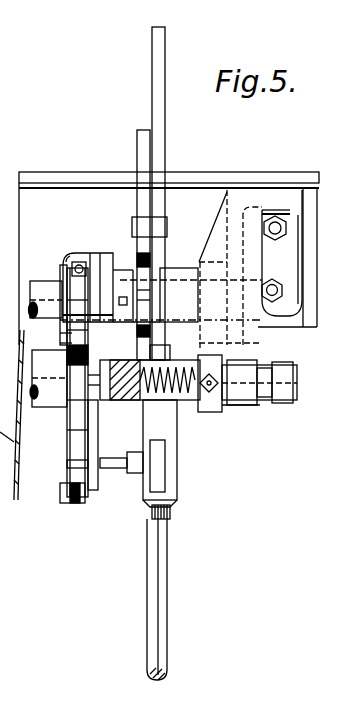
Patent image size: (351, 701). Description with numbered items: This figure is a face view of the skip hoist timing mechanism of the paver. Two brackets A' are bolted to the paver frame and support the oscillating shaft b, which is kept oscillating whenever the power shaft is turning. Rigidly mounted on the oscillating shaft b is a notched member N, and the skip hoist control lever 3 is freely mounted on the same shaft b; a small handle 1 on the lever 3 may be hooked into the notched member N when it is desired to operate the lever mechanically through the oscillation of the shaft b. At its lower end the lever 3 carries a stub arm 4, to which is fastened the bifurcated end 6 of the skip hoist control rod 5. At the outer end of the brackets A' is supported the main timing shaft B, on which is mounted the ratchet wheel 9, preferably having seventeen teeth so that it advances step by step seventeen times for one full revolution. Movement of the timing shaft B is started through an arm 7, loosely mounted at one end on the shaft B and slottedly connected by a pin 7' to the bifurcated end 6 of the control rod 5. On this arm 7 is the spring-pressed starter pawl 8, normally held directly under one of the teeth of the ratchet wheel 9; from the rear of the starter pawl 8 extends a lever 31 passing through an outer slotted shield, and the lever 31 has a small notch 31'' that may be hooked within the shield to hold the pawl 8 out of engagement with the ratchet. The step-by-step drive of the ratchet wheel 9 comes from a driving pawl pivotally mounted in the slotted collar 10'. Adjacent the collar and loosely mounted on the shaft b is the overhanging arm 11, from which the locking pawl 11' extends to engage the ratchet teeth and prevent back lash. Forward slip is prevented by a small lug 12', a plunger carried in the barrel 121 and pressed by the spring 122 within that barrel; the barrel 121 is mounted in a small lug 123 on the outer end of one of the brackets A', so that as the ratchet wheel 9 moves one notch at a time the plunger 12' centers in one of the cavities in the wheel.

The small handle 1 is at (137, 153).
The skip hoist control lever 3 is at (166, 120).
The stub arm 4 is at (168, 362).
The skip hoist control rod 5 is at (157, 580).
The bifurcated end 6 is at (172, 450).
The arm 7 is at (93, 463).
The pin 7' is at (121, 479).
The starter pawl 8 is at (80, 501).
The ratchet wheel 9 is at (78, 427).
The slotted collar 10' is at (65, 237).
The overhanging arm 11 is at (95, 275).
The locking pawl 11' is at (83, 252).
The small lug 12' is at (65, 392).
The lever 31 is at (48, 287).
The small notch 31'' is at (49, 340).
The barrel 121 is at (185, 401).
The spring 122 is at (125, 400).
The small lug 123 is at (222, 410).
The brackets A' is at (274, 267).
The main timing shaft B is at (293, 385).
The notched member N is at (143, 277).
The oscillating shaft b is at (34, 282).